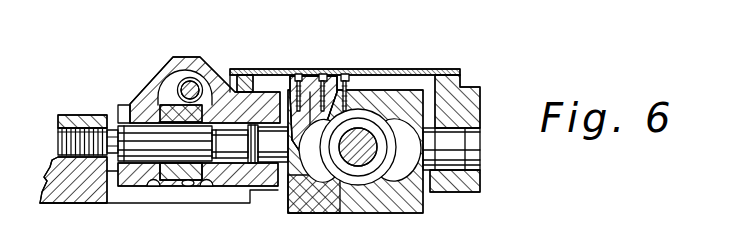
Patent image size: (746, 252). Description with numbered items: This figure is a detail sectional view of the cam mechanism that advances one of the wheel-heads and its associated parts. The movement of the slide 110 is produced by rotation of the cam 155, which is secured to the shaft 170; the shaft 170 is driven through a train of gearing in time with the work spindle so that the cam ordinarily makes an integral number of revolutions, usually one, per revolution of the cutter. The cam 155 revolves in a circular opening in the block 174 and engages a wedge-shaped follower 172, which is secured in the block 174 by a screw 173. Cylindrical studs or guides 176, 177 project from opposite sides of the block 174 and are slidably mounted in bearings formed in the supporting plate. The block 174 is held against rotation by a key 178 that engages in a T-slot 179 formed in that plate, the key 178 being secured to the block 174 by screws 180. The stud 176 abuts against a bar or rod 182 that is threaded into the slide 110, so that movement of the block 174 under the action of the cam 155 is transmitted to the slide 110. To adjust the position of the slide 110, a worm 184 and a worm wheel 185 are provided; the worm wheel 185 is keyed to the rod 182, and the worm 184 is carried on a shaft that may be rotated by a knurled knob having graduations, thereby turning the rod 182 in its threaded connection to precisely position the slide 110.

The slide 110 is at (83, 194).
The cam 155 is at (377, 160).
The shaft 170 is at (353, 192).
The wedge-shaped follower 172 is at (290, 195).
The screw 173 is at (325, 77).
The block 174 is at (416, 202).
The stud 176 is at (276, 172).
The stud 177 is at (470, 147).
The key 178 is at (295, 77).
The T-slot 179 is at (243, 79).
The screws 180 is at (360, 71).
The rod 182 is at (143, 135).
The worm 184 is at (185, 63).
The worm wheel 185 is at (190, 186).